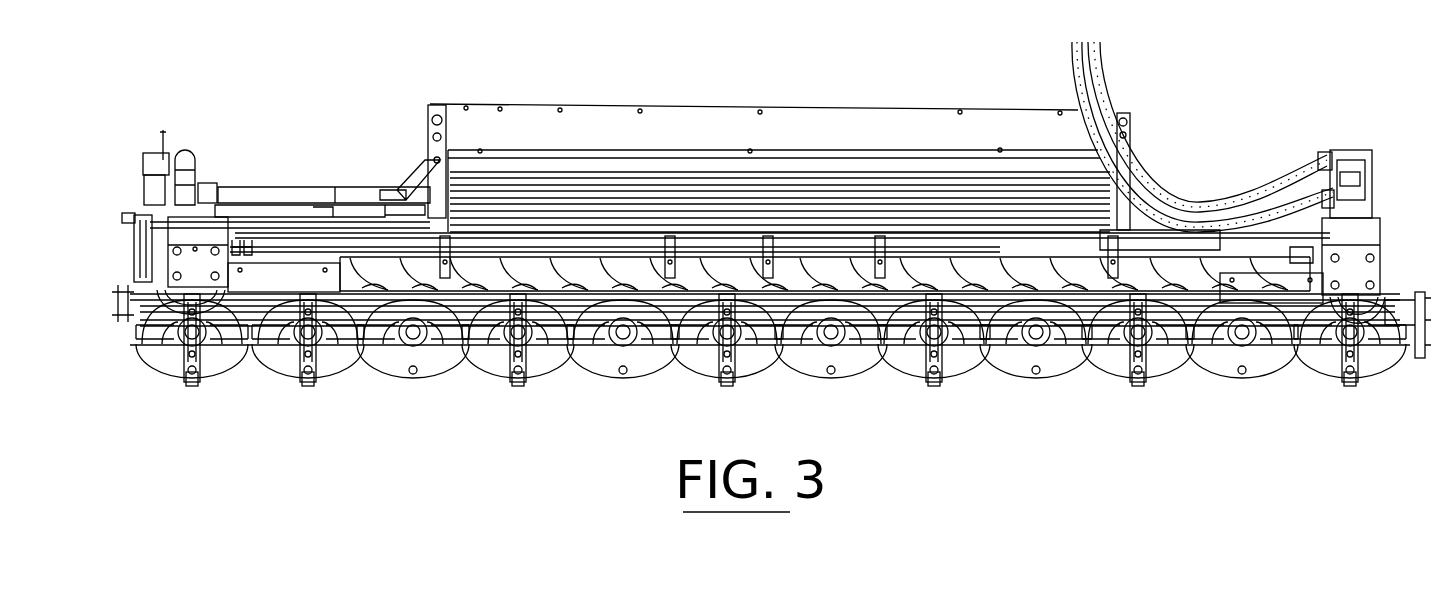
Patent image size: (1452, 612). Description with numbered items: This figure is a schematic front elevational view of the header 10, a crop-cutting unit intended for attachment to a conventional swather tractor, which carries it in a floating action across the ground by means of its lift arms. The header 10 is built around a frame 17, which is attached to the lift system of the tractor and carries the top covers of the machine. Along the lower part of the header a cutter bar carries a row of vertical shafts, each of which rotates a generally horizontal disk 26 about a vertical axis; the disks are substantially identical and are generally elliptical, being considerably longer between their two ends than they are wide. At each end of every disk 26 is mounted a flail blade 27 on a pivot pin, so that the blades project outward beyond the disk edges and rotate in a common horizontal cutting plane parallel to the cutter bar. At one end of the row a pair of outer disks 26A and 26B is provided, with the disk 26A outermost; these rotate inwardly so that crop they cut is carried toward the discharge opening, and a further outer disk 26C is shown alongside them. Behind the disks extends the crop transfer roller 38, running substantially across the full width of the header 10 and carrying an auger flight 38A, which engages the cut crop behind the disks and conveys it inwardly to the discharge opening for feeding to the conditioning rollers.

The header 10 is at (940, 80).
The frame 17 is at (380, 160).
The disk 26 is at (850, 356).
The outer disk 26A is at (1366, 388).
The outer disk 26B is at (1260, 388).
The cutter disc 26C is at (1162, 386).
The flail blade 27 is at (730, 384).
The crop transfer roller 38 is at (557, 276).
The auger flight 38A is at (498, 288).